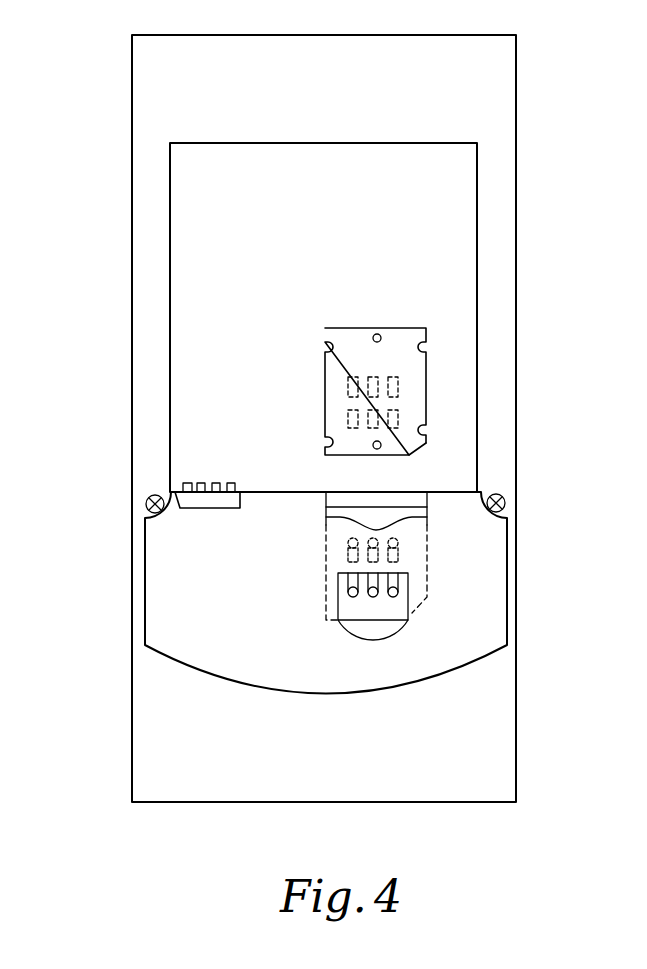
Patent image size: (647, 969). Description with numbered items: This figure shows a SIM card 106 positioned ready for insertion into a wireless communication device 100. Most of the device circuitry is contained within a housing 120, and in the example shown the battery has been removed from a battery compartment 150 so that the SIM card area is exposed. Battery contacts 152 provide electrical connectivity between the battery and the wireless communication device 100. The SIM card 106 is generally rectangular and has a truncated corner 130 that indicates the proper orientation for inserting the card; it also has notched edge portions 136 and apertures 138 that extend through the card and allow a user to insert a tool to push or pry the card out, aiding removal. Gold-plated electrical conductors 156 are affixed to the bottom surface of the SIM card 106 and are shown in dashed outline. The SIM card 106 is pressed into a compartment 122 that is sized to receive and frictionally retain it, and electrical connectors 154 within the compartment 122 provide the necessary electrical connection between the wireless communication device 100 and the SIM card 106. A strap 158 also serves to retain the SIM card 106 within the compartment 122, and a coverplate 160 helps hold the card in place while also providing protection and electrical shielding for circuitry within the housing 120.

The wireless communication device 100 is at (152, 868).
The housing 120 is at (516, 150).
The battery compartment 150 is at (223, 250).
The coverplate 160 is at (170, 622).
The battery contacts 152 is at (202, 483).
The compartment 122 is at (417, 556).
The strap 158 is at (400, 497).
The electrical connectors 154 is at (347, 556).
The notched edge portions 136 is at (427, 347).
The truncated corner 130 is at (422, 447).
The apertures 138 is at (377, 334).
The SIM card 106 is at (412, 386).
The electrical conductors 156 is at (345, 388).